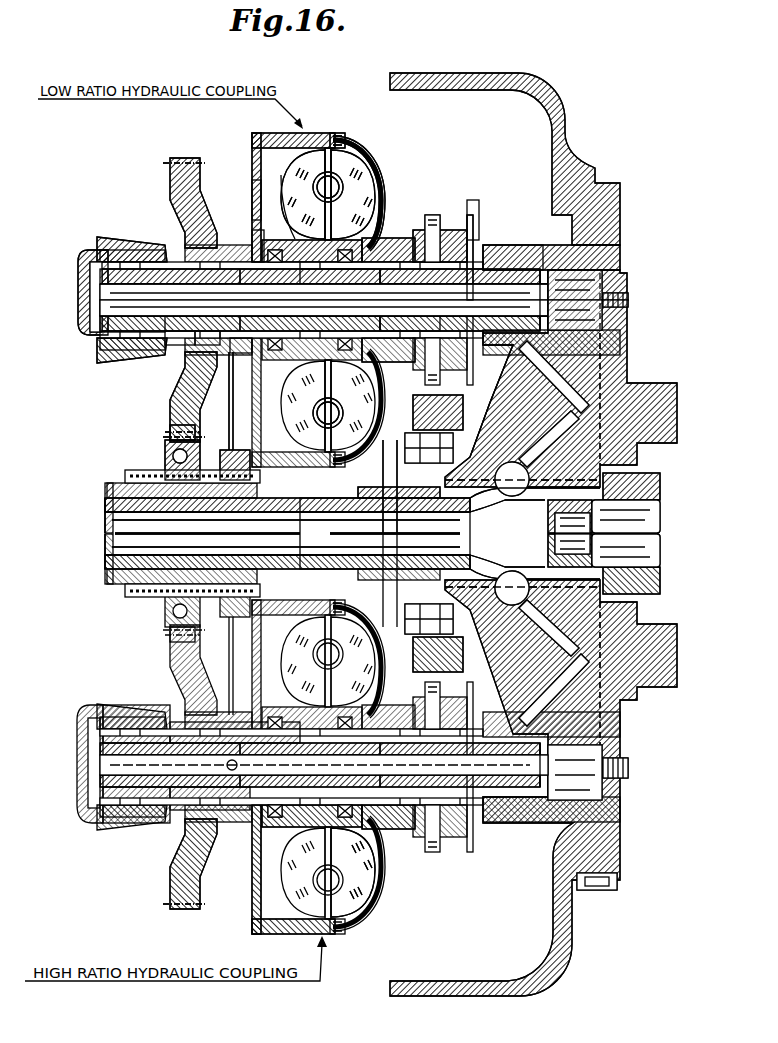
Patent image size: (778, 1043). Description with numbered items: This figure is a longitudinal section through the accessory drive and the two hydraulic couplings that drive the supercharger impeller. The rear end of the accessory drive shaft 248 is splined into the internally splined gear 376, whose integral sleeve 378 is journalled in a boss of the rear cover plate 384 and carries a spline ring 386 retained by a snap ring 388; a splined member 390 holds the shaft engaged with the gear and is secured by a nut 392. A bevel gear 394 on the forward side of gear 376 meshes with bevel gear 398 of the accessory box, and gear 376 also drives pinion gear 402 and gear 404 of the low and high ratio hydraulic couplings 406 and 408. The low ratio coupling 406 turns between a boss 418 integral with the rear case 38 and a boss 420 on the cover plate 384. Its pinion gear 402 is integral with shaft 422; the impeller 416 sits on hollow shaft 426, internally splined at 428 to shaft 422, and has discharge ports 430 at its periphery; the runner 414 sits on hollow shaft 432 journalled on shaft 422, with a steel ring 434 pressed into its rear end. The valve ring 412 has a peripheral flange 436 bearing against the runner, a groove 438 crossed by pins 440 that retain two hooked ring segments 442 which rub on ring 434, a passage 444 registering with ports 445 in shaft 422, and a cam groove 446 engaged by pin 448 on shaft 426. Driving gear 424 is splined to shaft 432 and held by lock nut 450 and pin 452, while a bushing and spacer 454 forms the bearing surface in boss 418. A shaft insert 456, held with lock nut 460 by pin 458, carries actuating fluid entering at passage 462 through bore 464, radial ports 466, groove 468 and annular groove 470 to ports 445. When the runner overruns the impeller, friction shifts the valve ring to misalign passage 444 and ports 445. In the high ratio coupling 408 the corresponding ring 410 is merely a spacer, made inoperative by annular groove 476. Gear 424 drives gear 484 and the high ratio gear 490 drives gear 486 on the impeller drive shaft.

The rear case 38 is at (564, 130).
The accessory drive shaft 248 is at (243, 555).
The internally splined gear 376 is at (470, 409).
The integral sleeve 378 is at (385, 537).
The rear cover plate 384 is at (622, 711).
The spline ring 386 is at (636, 490).
The snap ring 388 is at (640, 583).
The member 390 is at (462, 537).
The nut 392 is at (572, 533).
The bevel gear 394 is at (368, 452).
The bevel gear 398 is at (430, 440).
The driven pinion gear 402 is at (453, 382).
The gear 404 is at (452, 673).
The low ratio hydraulic coupling assembly 406 is at (378, 158).
The high ratio hydraulic coupling assembly 408 is at (362, 924).
The ring 410 is at (378, 871).
The valve ring 412 is at (380, 243).
The runner 414 is at (283, 188).
The coupling impeller 416 is at (382, 174).
The boss 418 is at (112, 236).
The boss 420 is at (507, 247).
The shaft 422 is at (462, 280).
The driving gear 424 is at (197, 190).
The hollow shaft 426 is at (478, 204).
The internal splines 428 is at (468, 232).
The fluid discharge ports 430 is at (342, 140).
The hollow shaft 432 is at (258, 243).
The steel ring 434 is at (304, 194).
The peripheral flange 436 is at (353, 194).
The groove 438 is at (257, 196).
The pins 440 is at (330, 292).
The ring segments 442 is at (312, 178).
The passage 444 is at (415, 240).
The ports 445 is at (386, 299).
The cam groove 446 is at (340, 406).
The pin 448 is at (380, 378).
The lock nut 450 is at (205, 345).
The pin 452 is at (185, 340).
The bushing and spacer 454 is at (108, 355).
The shaft insert 456 is at (388, 318).
The pin 458 is at (85, 262).
The lock nut 460 is at (108, 310).
The passage 462 is at (100, 333).
The bore 464 is at (100, 292).
The radial ports 466 is at (228, 302).
The groove 468 is at (240, 358).
The annular groove 470 is at (306, 300).
The annular groove 476 is at (382, 766).
The gear 484 is at (165, 458).
The gear 486 is at (230, 452).
The high ratio coupling gear 490 is at (212, 902).